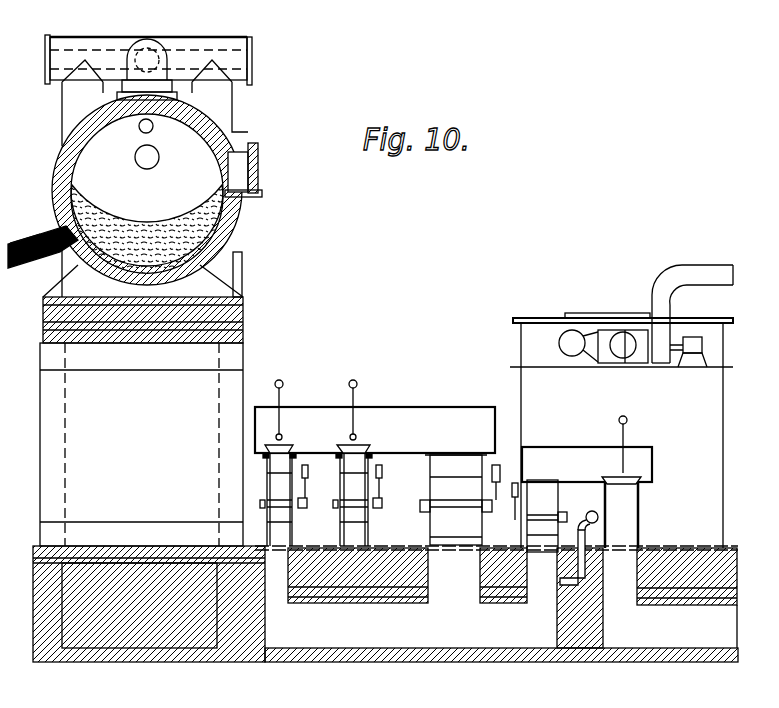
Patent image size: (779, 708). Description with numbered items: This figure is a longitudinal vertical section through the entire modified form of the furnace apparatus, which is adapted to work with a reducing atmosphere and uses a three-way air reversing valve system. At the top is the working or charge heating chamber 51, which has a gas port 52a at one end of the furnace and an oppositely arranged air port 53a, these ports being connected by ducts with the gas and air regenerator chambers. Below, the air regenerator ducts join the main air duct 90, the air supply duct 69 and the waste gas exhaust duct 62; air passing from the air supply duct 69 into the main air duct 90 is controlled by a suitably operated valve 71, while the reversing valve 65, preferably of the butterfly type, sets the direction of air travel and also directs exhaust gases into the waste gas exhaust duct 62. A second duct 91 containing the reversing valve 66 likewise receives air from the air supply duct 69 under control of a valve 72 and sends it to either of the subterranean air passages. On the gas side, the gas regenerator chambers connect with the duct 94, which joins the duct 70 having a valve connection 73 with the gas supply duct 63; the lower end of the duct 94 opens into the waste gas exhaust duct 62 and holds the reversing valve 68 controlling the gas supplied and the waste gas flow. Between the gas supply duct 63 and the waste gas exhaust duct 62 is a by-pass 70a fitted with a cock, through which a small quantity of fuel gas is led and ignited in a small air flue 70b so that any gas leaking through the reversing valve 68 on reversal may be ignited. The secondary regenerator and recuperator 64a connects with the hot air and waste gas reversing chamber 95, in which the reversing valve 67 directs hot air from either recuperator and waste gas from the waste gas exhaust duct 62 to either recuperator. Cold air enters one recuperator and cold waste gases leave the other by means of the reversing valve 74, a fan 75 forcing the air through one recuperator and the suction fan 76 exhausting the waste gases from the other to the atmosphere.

The working or charge heating chamber 51 is at (53, 182).
The gas port 52a is at (178, 82).
The air port 53a is at (268, 51).
The waste gas exhaust duct 62 is at (445, 598).
The gas supply duct 63 is at (678, 518).
The secondary regenerator and recuperator 64a is at (621, 430).
The reversing valve 65 is at (282, 496).
The reversing valve 66 is at (358, 496).
The reversing valve 67 is at (452, 486).
The reversing valve 68 is at (548, 512).
The air supply duct 69 is at (375, 430).
The duct 70 is at (587, 464).
The by-pass 70a is at (598, 526).
The air flue 70b is at (605, 555).
The valve 71 is at (284, 447).
The valve 72 is at (358, 446).
The valve connection 73 is at (641, 478).
The reversing valve 74 is at (620, 335).
The fan 75 is at (575, 351).
The suction fan 76 is at (663, 335).
The main air duct 90 is at (268, 527).
The duct 91 is at (340, 529).
The duct 94 is at (567, 508).
The hot air and waste gas reversing chamber 95 is at (482, 528).